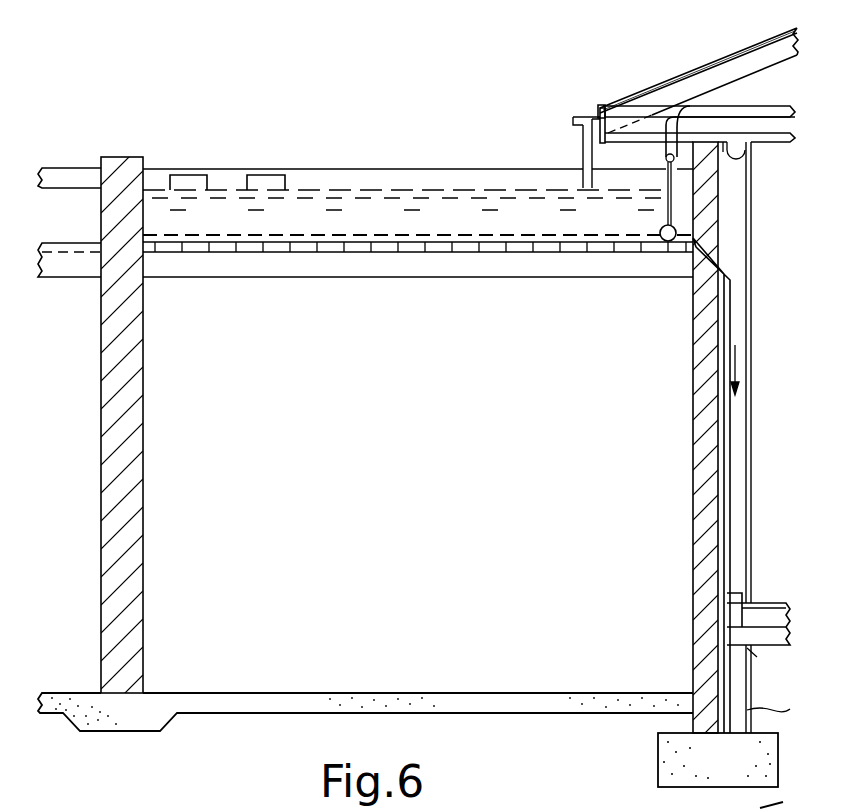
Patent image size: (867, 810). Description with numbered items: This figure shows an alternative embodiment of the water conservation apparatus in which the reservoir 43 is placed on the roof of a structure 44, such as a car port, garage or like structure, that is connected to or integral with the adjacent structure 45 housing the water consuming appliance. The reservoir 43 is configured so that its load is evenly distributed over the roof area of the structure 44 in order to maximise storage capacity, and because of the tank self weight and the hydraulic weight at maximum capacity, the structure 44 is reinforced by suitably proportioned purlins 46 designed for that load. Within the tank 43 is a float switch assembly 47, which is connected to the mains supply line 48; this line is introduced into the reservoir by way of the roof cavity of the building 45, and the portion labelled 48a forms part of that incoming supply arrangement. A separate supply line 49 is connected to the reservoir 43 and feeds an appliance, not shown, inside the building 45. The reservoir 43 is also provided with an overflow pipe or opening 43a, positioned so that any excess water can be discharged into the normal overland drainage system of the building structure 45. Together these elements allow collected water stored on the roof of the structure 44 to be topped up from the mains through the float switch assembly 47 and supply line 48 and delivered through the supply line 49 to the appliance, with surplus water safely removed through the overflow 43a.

The reservoir 43 is at (400, 205).
The overflow pipe or opening 43a is at (267, 176).
The structure 44 is at (78, 173).
The adjacent structure 45 is at (677, 96).
The purlins 46 is at (457, 268).
The float switch assembly 47 is at (676, 210).
The mains supply line 48 is at (698, 80).
The collector surface 48a is at (746, 105).
The supply line 49 is at (732, 273).